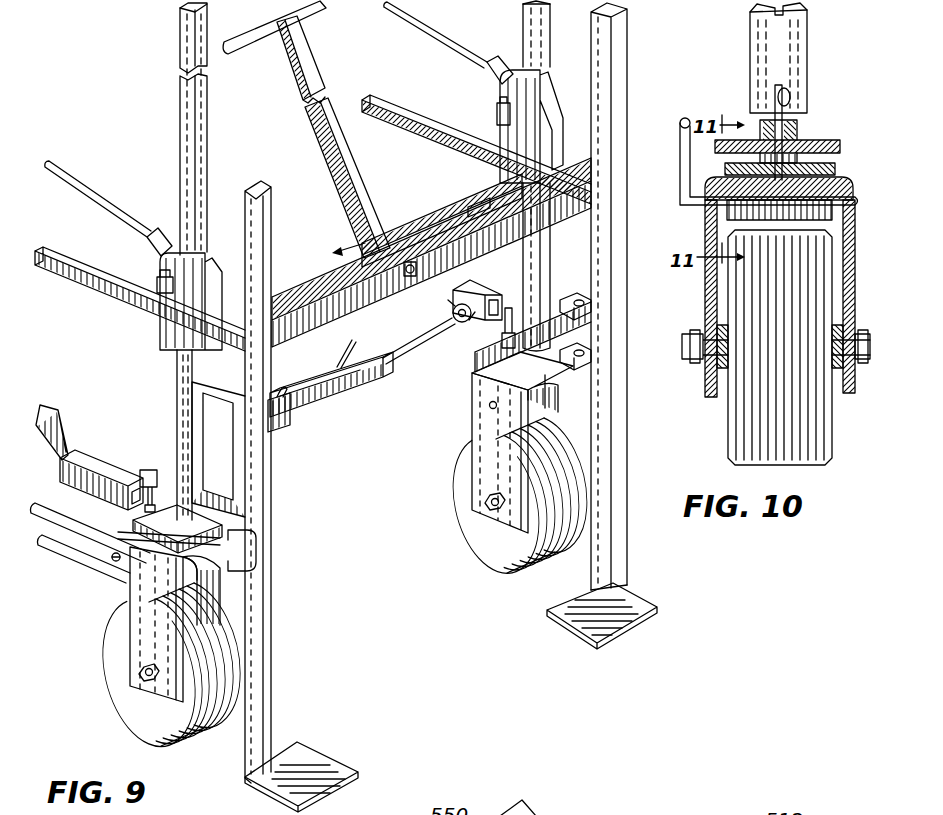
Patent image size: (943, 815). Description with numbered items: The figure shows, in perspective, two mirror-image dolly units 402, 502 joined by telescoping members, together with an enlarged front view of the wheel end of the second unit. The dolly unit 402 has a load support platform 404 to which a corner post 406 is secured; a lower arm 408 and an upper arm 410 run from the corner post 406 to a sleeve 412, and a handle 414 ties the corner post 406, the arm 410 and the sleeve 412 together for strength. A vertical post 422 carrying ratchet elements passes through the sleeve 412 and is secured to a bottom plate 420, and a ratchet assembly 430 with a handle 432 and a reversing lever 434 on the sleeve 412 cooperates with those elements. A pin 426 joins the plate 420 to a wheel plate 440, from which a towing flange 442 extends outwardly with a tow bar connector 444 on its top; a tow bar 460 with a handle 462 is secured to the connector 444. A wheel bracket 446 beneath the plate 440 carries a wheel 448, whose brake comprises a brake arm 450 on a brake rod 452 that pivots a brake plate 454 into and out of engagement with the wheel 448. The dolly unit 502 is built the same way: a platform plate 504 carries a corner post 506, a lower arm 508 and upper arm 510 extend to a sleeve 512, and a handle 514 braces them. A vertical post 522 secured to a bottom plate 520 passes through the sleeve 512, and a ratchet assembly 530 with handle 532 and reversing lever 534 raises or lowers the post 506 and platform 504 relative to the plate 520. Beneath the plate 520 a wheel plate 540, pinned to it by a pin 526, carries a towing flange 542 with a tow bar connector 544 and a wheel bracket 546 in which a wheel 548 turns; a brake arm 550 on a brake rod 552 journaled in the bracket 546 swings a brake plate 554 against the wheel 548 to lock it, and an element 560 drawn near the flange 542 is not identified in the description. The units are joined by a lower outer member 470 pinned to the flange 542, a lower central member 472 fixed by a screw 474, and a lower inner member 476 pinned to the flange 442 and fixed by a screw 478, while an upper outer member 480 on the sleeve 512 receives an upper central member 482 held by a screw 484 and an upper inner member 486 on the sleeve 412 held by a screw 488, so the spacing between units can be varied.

In FIG. 9, the dolly unit 402 is at (522, 46).
In FIG. 9, the load support bracket or platform 404 is at (645, 600).
In FIG. 9, the corner post 406 is at (628, 548).
In FIG. 9, the lower arm 408 is at (575, 380).
In FIG. 9, the upper arm 410 is at (577, 185).
In FIG. 9, the sleeve 412 is at (545, 285).
In FIG. 9, the handle 414 is at (398, 115).
In FIG. 9, the bottom plate 420 is at (560, 325).
In FIG. 9, the vertical post 422 is at (565, 28).
In FIG. 9, the pin 426 is at (485, 320).
In FIG. 9, the ratchet assembly 430 is at (500, 128).
In FIG. 9, the handle 432 is at (450, 38).
In FIG. 9, the reversing lever 434 is at (497, 110).
In FIG. 9, the wheel plate 440 is at (480, 375).
In FIG. 9, the towing flange 442 is at (448, 298).
In FIG. 9, the tow bar connector 444 is at (500, 272).
In FIG. 9, the wheel bracket 446 is at (468, 498).
In FIG. 9, the wheel 448 is at (500, 550).
In FIG. 9, the brake arm 450 is at (400, 318).
In FIG. 9, the brake rod 452 is at (490, 408).
In FIG. 9, the brake plate 454 is at (580, 440).
In FIG. 9, the tow bar 460 is at (312, 78).
In FIG. 9, the handle 462 is at (322, 6).
In FIG. 9, the lower outer member 470 is at (283, 427).
In FIG. 9, the lower central member 472 is at (330, 403).
In FIG. 9, the screw 474 is at (300, 375).
In FIG. 9, the lower inner member 476 is at (400, 370).
In FIG. 9, the screw 478 is at (352, 340).
In FIG. 9, the upper outer member 480 is at (308, 290).
In FIG. 9, the upper central member 482 is at (436, 196).
In FIG. 9, the screw 484 is at (346, 233).
In FIG. 9, the upper inner member 486 is at (455, 212).
In FIG. 9, the screw 488 is at (473, 207).
In FIG. 9, the dolly unit 502 is at (178, 128).
In FIG. 9, the load support bracket or platform plate 504 is at (345, 758).
In FIG. 9, the corner post 506 is at (272, 710).
In FIG. 9, the lower arm 508 is at (240, 560).
In FIG. 9, the upper arm 510 is at (232, 400).
In FIG. 9, the sleeve 512 is at (182, 422).
In FIG. 10, the sleeve 512 is at (750, 60).
In FIG. 9, the handle 514 is at (125, 304).
In FIG. 9, the bottom plate 520 is at (235, 540).
In FIG. 10, the bottom plate 520 is at (840, 143).
In FIG. 9, the vertical post 522 is at (180, 86).
In FIG. 10, the vertical post 522 is at (757, 10).
In FIG. 9, the pin 526 is at (152, 472).
In FIG. 10, the pin 526 is at (795, 92).
In FIG. 9, the ratchet assembly 530 is at (163, 330).
In FIG. 9, the handle 532 is at (135, 197).
In FIG. 9, the reversing lever 534 is at (160, 278).
In FIG. 9, the wheel plate 540 is at (113, 553).
In FIG. 10, the wheel plate 540 is at (835, 168).
In FIG. 9, the towing flange 542 is at (85, 540).
In FIG. 9, the tow bar connector 544 is at (100, 498).
In FIG. 9, the wheel bracket 546 is at (130, 590).
In FIG. 10, the wheel bracket 546 is at (856, 230).
In FIG. 9, the wheel 548 is at (145, 716).
In FIG. 10, the wheel 548 is at (843, 428).
In FIG. 9, the brake arm 550 is at (110, 568).
In FIG. 10, the brake arm 550 is at (680, 175).
In FIG. 9, the brake rod 552 is at (160, 598).
In FIG. 10, the brake rod 552 is at (705, 225).
In FIG. 9, the brake plate 554 is at (212, 580).
In FIG. 10, the brake plate 554 is at (855, 185).
In FIG. 9, the spring blade 560 is at (55, 440).